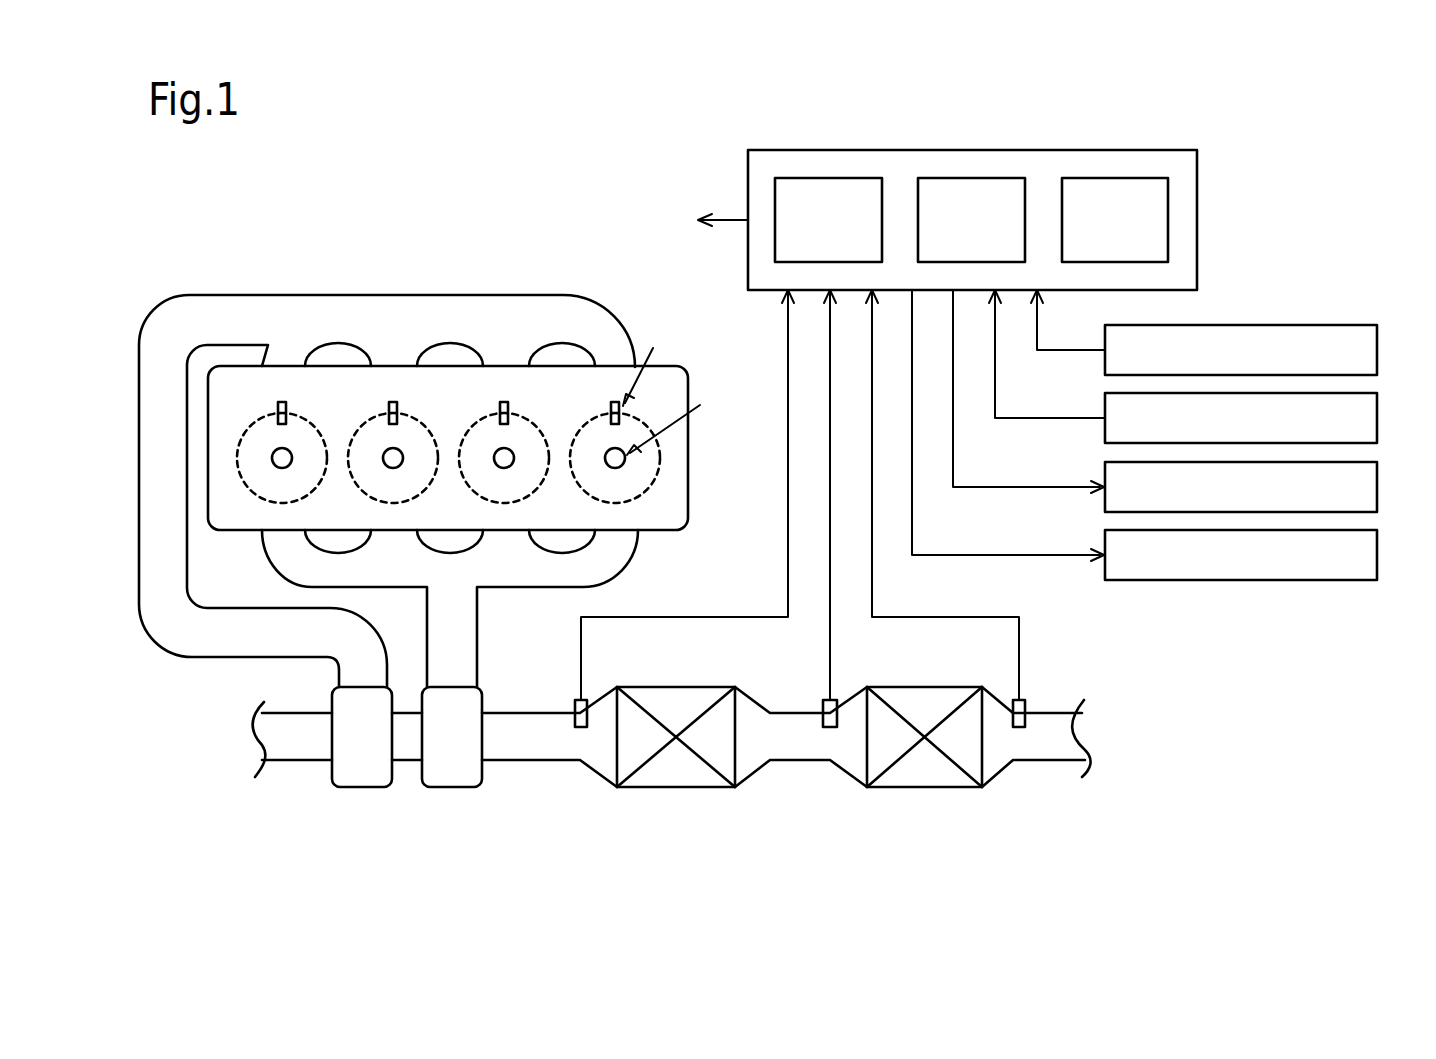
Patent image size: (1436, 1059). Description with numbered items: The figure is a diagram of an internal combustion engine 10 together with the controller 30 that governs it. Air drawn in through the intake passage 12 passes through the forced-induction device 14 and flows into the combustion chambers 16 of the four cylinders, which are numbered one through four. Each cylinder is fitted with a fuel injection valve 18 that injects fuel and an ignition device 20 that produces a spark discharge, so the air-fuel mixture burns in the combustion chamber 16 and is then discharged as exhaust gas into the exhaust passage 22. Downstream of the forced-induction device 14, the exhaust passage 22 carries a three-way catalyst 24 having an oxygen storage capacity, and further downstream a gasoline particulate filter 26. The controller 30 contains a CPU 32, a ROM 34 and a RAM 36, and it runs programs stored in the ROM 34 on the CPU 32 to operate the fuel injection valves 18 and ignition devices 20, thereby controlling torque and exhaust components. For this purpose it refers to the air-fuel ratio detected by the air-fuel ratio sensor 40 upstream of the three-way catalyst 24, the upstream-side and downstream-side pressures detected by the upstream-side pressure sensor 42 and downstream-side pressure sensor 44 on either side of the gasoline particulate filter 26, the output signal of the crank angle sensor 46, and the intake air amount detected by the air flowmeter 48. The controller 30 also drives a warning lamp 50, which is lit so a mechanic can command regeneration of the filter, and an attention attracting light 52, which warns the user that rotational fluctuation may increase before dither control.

The internal combustion engine 10 is at (493, 246).
The intake passage 12 is at (281, 759).
The forced-induction device 14 is at (407, 779).
The combustion chamber 16 is at (258, 445).
The fuel injection valve 18 is at (284, 402).
The ignition device 20 is at (290, 458).
The exhaust passage 22 is at (613, 572).
The three-way catalyst 24 is at (672, 775).
The gasoline particulate filter 26 is at (920, 772).
The controller 30 is at (1175, 150).
The CPU 32 is at (832, 178).
The ROM 34 is at (972, 178).
The RAM 36 is at (1116, 178).
The air-fuel ratio sensor 40 is at (575, 703).
The upstream-side pressure sensor 42 is at (823, 703).
The downstream-side pressure sensor 44 is at (1013, 703).
The crank angle sensor 46 is at (1380, 352).
The air flowmeter 48 is at (1380, 420).
The warning lamp 50 is at (1380, 489).
The attention attracting light 52 is at (1380, 557).